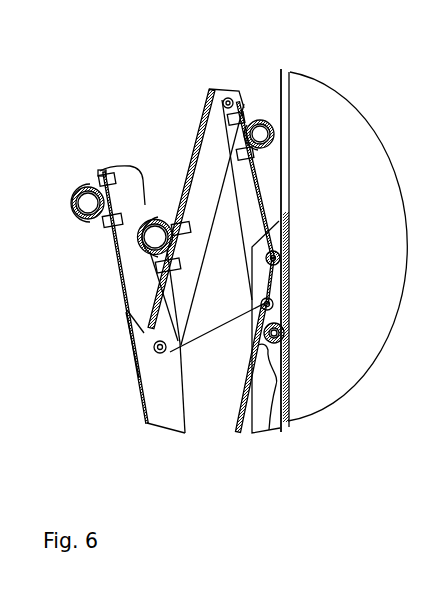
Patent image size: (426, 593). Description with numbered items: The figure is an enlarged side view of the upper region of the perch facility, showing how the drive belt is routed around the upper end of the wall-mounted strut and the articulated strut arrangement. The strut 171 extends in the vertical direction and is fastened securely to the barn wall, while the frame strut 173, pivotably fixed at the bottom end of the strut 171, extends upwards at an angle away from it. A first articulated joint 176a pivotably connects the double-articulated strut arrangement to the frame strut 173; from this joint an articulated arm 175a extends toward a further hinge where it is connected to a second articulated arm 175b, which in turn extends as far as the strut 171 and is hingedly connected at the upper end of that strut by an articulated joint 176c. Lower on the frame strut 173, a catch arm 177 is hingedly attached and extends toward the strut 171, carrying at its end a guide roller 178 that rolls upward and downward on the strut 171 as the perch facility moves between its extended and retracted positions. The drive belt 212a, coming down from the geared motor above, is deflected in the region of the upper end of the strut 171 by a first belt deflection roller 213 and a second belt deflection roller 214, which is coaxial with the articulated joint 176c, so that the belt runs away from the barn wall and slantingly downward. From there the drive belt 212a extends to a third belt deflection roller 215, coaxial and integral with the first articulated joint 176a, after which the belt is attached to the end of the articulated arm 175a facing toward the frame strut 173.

The strut 171 is at (290, 312).
The frame strut 173 is at (126, 248).
The articulated arm 175a is at (197, 178).
The second articulated arm 175b is at (243, 187).
The first articulated joint 176a is at (156, 347).
The articulated joint 176c is at (261, 303).
The catch arm 177 is at (242, 428).
The guide roller 178 is at (288, 332).
The drive belt 212a is at (280, 69).
The first belt deflection roller 213 is at (279, 254).
The second belt deflection roller 214 is at (274, 301).
The third belt deflection roller 215 is at (178, 352).